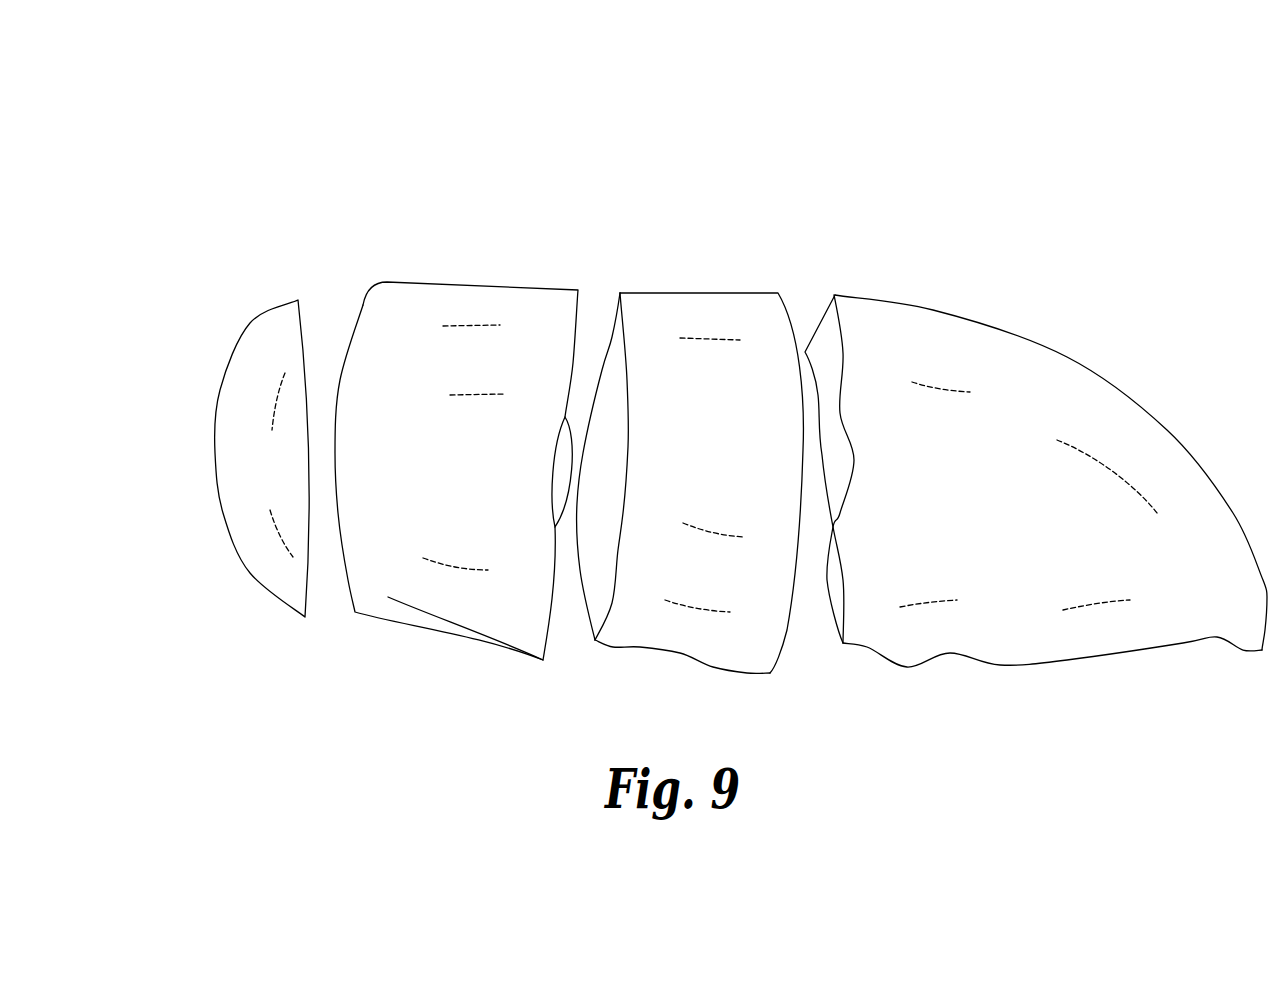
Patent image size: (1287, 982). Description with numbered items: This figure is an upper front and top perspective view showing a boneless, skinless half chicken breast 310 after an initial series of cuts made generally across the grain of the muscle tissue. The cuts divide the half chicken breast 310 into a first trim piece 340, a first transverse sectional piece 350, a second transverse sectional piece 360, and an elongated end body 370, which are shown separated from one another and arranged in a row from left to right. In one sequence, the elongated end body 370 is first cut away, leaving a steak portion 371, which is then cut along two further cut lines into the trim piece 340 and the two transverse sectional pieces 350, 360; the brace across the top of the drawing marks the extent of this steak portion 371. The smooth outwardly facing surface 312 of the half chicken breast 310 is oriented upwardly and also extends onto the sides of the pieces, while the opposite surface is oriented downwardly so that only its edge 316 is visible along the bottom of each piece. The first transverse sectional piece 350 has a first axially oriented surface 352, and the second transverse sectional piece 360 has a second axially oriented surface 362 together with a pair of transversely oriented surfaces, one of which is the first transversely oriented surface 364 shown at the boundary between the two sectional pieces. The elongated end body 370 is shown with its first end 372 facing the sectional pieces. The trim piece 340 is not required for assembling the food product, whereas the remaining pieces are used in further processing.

The steak portion 371 is at (795, 143).
The half chicken breast 310 is at (363, 207).
The first trim piece 340 is at (227, 302).
The outwardly facing surface 312 is at (286, 482).
The first transverse sectional piece 350 is at (483, 233).
The first axially oriented surface 352 is at (452, 467).
The first transversely oriented surface 364 is at (617, 403).
The second transverse sectional piece 360 is at (717, 253).
The second axially oriented surface 362 is at (700, 440).
The elongated end body 370 is at (1003, 290).
The first end 372 is at (920, 470).
The edge 316 is at (267, 595).